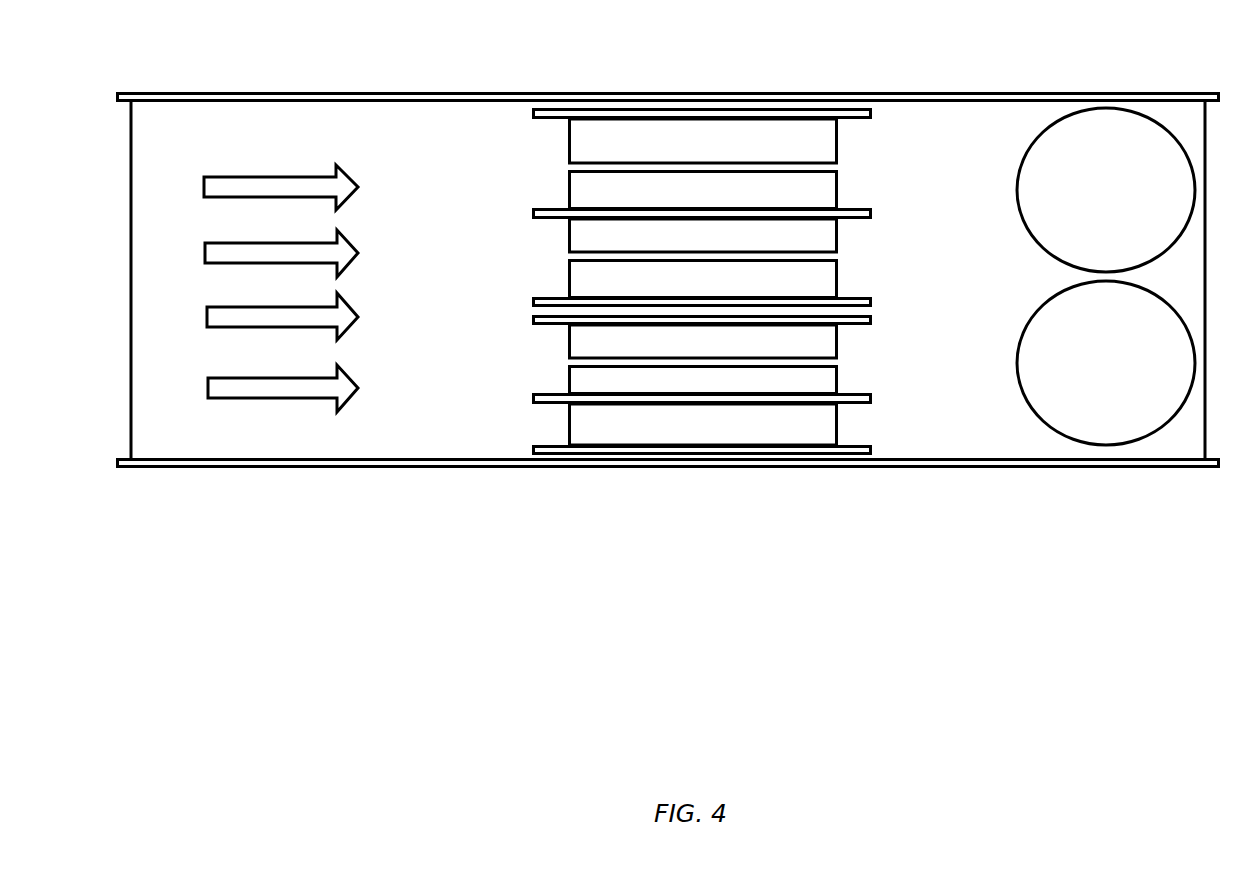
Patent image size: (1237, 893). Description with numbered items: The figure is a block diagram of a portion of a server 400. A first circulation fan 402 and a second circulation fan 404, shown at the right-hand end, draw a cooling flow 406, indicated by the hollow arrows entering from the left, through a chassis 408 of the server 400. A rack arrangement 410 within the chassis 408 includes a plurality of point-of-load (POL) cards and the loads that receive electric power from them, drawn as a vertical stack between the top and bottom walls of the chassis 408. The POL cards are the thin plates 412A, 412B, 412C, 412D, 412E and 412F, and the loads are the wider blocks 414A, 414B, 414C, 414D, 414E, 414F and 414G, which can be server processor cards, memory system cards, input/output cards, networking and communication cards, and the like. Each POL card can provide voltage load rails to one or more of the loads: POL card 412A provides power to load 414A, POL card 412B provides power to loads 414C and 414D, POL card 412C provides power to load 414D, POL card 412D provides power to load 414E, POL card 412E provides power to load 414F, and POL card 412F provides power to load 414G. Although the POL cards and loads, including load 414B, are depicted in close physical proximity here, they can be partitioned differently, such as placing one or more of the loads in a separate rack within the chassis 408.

The server 400 is at (711, 21).
The first circulation fan 402 is at (1124, 205).
The second circulation fan 404 is at (1124, 377).
The cooling flow 406 is at (355, 184).
The chassis 408 is at (357, 92).
The rack arrangement 410 is at (494, 450).
The POL card 412A is at (554, 118).
The POL card 412B is at (863, 207).
The POL card 412C is at (863, 297).
The POL card 412D is at (537, 324).
The POL card 412E is at (862, 393).
The POL card 412F is at (872, 447).
The load 414A is at (742, 149).
The load 414B is at (742, 203).
The load 414C is at (742, 249).
The load 414D is at (742, 292).
The load 414E is at (742, 352).
The load 414F is at (742, 391).
The load 414G is at (742, 437).